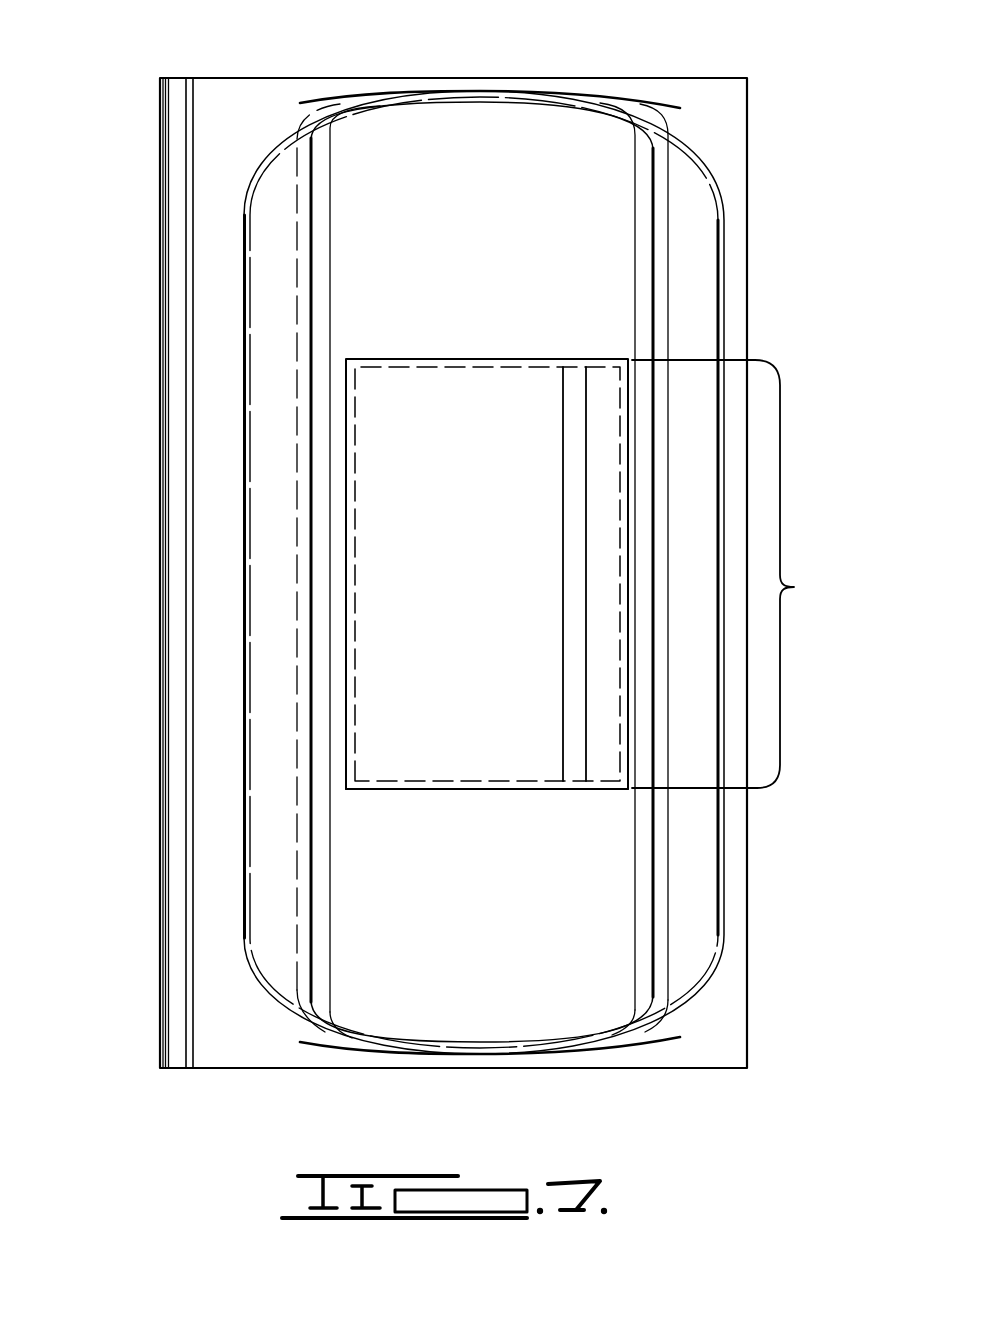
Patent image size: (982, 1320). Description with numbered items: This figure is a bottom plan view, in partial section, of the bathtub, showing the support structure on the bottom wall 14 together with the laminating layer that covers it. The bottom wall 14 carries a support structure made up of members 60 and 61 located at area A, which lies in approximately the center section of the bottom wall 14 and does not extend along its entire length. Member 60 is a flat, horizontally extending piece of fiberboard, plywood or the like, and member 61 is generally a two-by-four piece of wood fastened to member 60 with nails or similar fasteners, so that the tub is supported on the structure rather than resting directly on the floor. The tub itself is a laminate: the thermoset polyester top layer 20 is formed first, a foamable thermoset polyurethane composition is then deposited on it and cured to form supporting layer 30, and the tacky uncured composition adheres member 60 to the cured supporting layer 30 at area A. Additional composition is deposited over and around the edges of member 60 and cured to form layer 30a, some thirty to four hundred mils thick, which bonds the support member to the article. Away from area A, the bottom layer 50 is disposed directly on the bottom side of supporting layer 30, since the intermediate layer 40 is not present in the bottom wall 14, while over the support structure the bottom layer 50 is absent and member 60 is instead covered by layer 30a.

The bottom wall 14 is at (607, 168).
The thermoset polyester top layer 20 is at (160, 612).
The supporting layer 30 is at (166, 660).
The cured layer over support member 30a is at (440, 790).
The intermediate layer 40 is at (180, 715).
The bottom layer 50 is at (187, 766).
The support member 60 is at (425, 385).
The wood member 61 is at (572, 382).
The area A is at (729, 574).